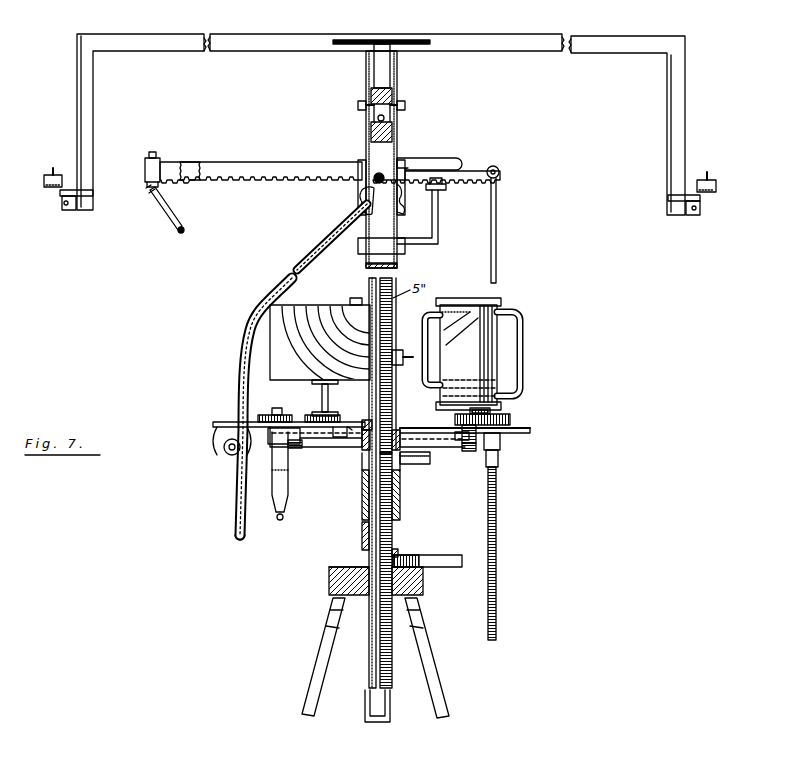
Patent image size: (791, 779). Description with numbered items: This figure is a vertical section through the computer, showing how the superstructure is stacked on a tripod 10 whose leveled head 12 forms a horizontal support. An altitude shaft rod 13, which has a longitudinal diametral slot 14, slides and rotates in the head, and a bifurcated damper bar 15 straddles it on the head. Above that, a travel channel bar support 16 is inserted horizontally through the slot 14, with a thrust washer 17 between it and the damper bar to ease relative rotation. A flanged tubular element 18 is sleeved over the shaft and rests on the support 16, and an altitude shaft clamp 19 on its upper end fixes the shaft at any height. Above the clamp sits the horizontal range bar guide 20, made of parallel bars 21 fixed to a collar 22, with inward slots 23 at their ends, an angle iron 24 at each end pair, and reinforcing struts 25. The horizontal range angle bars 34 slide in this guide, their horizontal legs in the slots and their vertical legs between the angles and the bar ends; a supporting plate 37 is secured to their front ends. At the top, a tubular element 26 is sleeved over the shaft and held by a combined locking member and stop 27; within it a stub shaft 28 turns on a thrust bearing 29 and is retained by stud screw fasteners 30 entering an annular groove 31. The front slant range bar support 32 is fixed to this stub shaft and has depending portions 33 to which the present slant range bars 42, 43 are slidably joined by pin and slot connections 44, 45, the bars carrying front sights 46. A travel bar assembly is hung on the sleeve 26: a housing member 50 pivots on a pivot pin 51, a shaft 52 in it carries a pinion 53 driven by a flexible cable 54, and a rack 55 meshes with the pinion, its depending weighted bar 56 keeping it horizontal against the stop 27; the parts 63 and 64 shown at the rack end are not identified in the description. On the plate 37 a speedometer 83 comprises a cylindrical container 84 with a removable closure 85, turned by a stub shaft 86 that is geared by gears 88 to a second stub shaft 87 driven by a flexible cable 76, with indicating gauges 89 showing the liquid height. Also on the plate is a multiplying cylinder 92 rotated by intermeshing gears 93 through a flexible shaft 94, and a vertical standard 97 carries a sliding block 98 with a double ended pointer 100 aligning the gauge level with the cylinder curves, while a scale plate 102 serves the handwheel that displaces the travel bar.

The tripod 10 is at (444, 696).
The tripod head 12 is at (423, 579).
The altitude shaft rod 13 is at (392, 668).
The longitudinal diametral slot 14 is at (369, 652).
The damper bar 15 is at (440, 558).
The travel channel bar support 16 is at (369, 534).
The thrust washer 17 is at (398, 552).
The tubular element 18 is at (398, 506).
The altitude shaft clamp 19 is at (414, 464).
The horizontal range bar guide 20 is at (371, 434).
The parallel bars 21 is at (326, 446).
The collar 22 is at (364, 418).
The slots 23 is at (300, 440).
The angle iron 24 is at (298, 449).
The struts 25 is at (398, 428).
The tubular element 26 is at (397, 150).
The combined locking member and stop 27 is at (438, 218).
The stub shaft 28 is at (374, 70).
The thrust bearing 29 is at (371, 134).
The stud screw fasteners 30 is at (358, 106).
The annular groove 31 is at (392, 95).
The front slant range bar support 32 is at (636, 40).
The depending portions 33 is at (78, 88).
The horizontal range angle bars 34 is at (308, 414).
The supporting plate 37 is at (530, 431).
The present slant range bar 42 is at (44, 181).
The present slant range bar 43 is at (716, 185).
The pin and slot connection 44 is at (62, 192).
The pin and slot connection 45 is at (64, 204).
The front sights 46 is at (53, 172).
The housing member 50 is at (440, 165).
The pivot pin 51 is at (372, 182).
The shaft 52 is at (362, 206).
The pinion 53 is at (400, 206).
The flexible cable 54 is at (321, 260).
The rack 55 is at (258, 168).
The depending weighted bar 56 is at (497, 268).
The handle 63 is at (172, 228).
The motor 64 is at (160, 190).
The flexible cable 76 is at (496, 546).
The speedometer 83 is at (521, 326).
The cylindrical container 84 is at (492, 352).
The removable closure 85 is at (460, 304).
The stub shaft 86 is at (484, 440).
The second stub shaft 87 is at (495, 410).
The gears 88 is at (510, 418).
The indicating gauges 89 is at (422, 325).
The multiplying cylinder 92 is at (300, 312).
The intermeshing gears 93 is at (268, 414).
The flexible shaft 94 is at (284, 508).
The vertical standard 97 is at (393, 286).
The block 98 is at (400, 365).
The double ended pointer 100 is at (409, 355).
The scale plate 102 is at (223, 450).